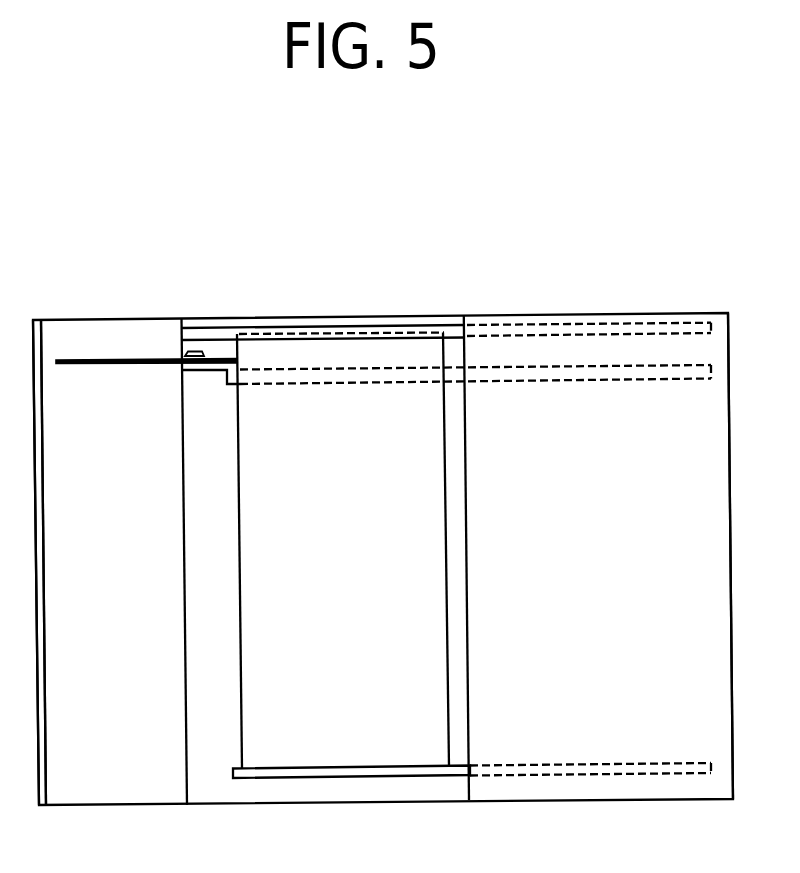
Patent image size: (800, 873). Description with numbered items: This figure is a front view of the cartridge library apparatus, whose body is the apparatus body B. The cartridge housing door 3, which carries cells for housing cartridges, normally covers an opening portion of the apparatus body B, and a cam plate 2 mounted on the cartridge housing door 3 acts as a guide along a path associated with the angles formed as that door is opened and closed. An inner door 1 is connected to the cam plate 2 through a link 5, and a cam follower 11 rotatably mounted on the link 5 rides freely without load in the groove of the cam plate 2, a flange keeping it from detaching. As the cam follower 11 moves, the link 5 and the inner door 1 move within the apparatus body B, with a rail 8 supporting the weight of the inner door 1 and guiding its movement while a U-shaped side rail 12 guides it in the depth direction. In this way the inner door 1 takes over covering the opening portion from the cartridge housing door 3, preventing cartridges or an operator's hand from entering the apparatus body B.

The inner door 1 is at (340, 353).
The cam plate 2 is at (93, 367).
The cartridge housing door 3 is at (118, 333).
The link 5 is at (201, 371).
The rail 8 is at (452, 383).
The cam follower 11 is at (201, 352).
The side rail 12 is at (380, 779).
The apparatus body B is at (703, 411).